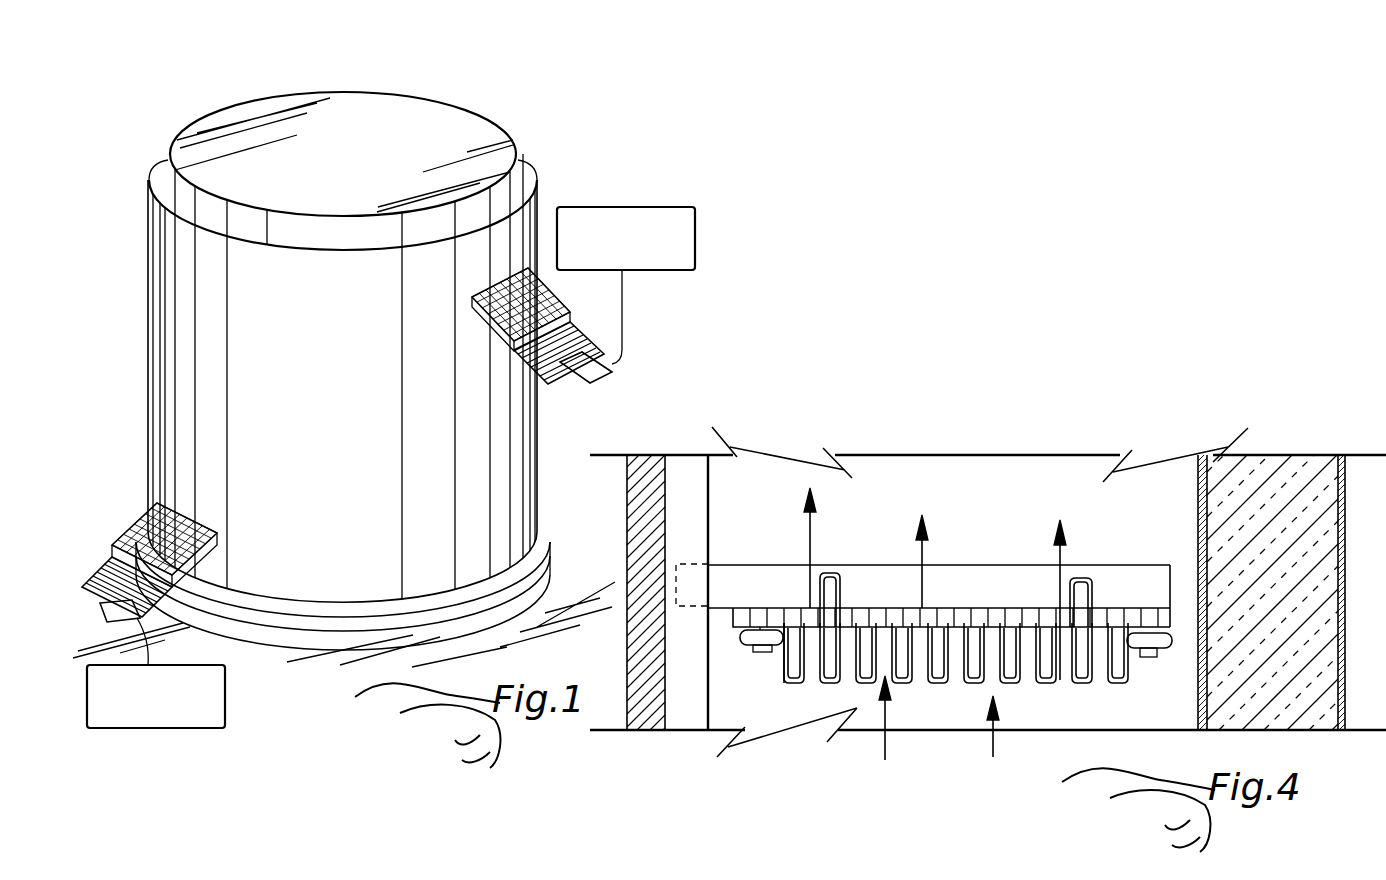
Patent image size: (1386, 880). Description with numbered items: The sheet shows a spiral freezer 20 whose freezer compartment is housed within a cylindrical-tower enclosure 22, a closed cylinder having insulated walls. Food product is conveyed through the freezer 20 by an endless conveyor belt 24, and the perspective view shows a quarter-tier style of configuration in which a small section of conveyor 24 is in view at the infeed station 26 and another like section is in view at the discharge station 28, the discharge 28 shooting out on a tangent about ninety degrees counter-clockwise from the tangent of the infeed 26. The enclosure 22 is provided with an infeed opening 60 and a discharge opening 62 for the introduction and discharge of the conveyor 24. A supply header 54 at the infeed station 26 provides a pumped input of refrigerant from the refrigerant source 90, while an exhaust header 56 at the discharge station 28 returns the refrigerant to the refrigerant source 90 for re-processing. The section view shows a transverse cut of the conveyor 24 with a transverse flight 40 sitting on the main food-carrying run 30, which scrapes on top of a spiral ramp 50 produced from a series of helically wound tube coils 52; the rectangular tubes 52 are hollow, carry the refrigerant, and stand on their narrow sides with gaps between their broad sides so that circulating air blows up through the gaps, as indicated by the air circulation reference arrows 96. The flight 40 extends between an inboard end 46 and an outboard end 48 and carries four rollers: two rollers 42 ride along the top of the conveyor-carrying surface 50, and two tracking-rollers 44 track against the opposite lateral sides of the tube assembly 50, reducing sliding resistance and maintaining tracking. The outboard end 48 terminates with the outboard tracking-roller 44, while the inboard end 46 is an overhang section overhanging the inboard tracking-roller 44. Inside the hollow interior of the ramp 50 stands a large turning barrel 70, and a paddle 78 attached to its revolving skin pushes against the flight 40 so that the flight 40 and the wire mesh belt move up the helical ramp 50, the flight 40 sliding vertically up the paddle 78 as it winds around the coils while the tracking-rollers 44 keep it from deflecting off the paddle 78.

In FIG. 1, the spiral freezer 20 is at (286, 72).
In FIG. 4, the spiral freezer 20 is at (909, 424).
In FIG. 1, the cylindrical-tower enclosure 22 is at (360, 171).
In FIG. 4, the cylindrical-tower enclosure 22 is at (1290, 467).
In FIG. 1, the endless conveyor belt 24 is at (137, 523).
In FIG. 4, the endless conveyor belt 24 is at (951, 569).
In FIG. 1, the infeed station 26 is at (142, 518).
In FIG. 1, the discharge station 28 is at (543, 296).
In FIG. 4, the food-carrying run 30 is at (1010, 613).
In FIG. 4, the flight 40 is at (874, 573).
In FIG. 4, the roller 42 is at (840, 597).
In FIG. 4, the tracking-roller 44 is at (748, 643).
In FIG. 4, the inboard end 46 is at (683, 564).
In FIG. 4, the outboard end 48 is at (1178, 580).
In FIG. 1, the spiral ramp 50 is at (107, 565).
In FIG. 4, the spiral ramp 50 is at (906, 683).
In FIG. 4, the tube coils 52 is at (784, 680).
In FIG. 1, the supply header 54 is at (95, 600).
In FIG. 1, the exhaust header 56 is at (560, 380).
In FIG. 1, the infeed opening 60 is at (200, 526).
In FIG. 1, the discharge opening 62 is at (475, 330).
In FIG. 4, the turning barrel 70 is at (633, 503).
In FIG. 4, the paddle 78 is at (699, 678).
In FIG. 1, the refrigerant source 90 is at (612, 207).
In FIG. 4, the air circulation reference arrows 96 is at (812, 532).